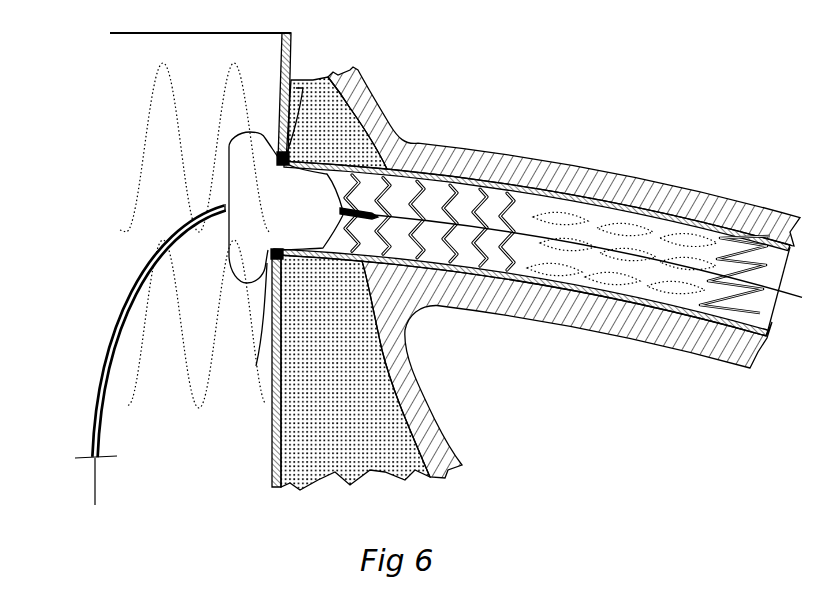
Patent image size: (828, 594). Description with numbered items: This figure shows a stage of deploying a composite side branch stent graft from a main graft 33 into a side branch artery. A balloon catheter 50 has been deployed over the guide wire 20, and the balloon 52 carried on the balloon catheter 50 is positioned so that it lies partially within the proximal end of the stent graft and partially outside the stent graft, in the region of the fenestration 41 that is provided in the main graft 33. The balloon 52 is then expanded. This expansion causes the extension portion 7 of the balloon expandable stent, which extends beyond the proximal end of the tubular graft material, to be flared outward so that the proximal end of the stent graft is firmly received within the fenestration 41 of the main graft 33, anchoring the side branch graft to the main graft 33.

The extension portion 7 is at (303, 88).
The balloon 52 is at (252, 174).
The balloon catheter 50 is at (101, 323).
The fenestration 41 is at (256, 366).
The main graft 33 is at (272, 441).
The guide wire 20 is at (95, 482).